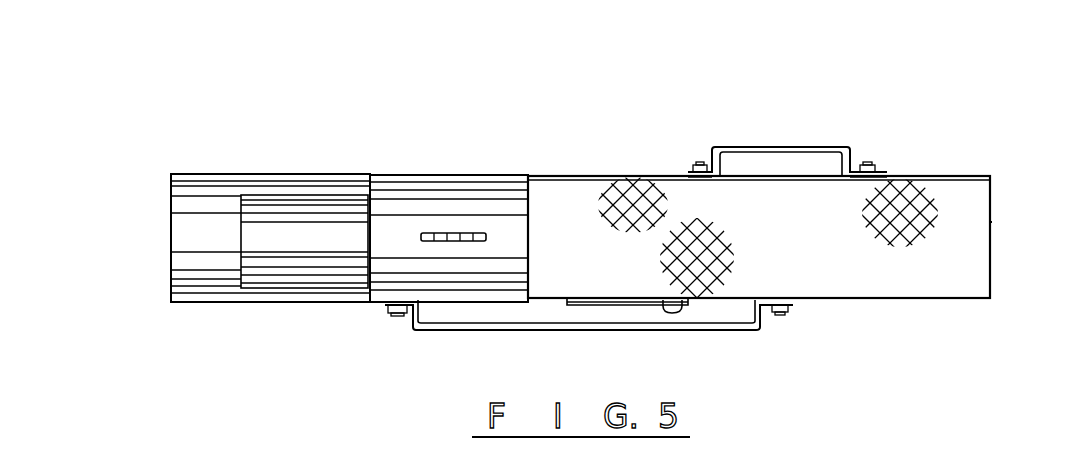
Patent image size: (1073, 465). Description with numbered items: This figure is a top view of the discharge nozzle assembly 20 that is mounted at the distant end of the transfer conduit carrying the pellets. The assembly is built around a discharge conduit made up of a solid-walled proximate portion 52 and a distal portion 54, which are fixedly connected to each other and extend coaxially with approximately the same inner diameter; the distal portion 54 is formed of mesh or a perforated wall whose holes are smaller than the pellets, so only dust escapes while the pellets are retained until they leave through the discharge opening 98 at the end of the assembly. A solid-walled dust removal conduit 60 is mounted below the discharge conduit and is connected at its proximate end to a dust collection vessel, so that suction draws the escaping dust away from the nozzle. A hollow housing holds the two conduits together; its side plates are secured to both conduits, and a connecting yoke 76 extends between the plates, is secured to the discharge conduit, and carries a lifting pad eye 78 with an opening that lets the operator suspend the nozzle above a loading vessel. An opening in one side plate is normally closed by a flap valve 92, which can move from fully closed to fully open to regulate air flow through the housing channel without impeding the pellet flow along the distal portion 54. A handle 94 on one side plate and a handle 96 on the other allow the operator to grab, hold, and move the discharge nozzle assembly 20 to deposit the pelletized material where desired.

The discharge nozzle assembly 20 is at (712, 78).
The proximate portion 52 is at (295, 232).
The distal portion 54 is at (930, 298).
The dust removal conduit 60 is at (208, 185).
The connecting yoke 76 is at (507, 207).
The lifting pad eye 78 is at (453, 232).
The flap valve 92 is at (682, 308).
The handle 94 is at (475, 330).
The handle 96 is at (815, 145).
The discharge opening 98 is at (990, 227).